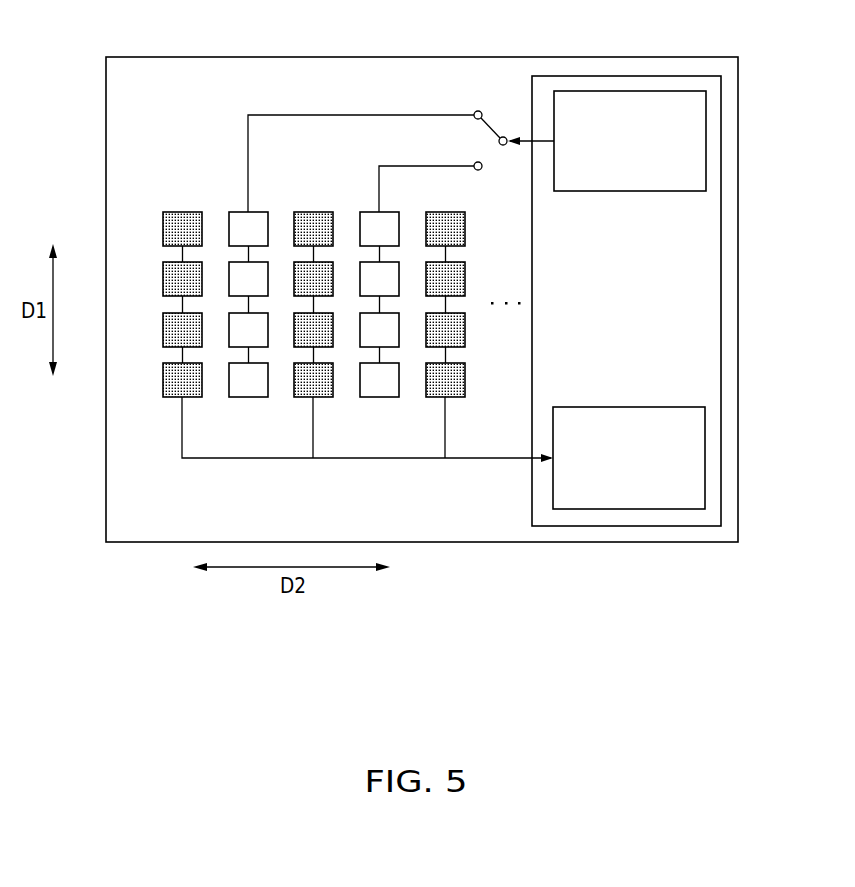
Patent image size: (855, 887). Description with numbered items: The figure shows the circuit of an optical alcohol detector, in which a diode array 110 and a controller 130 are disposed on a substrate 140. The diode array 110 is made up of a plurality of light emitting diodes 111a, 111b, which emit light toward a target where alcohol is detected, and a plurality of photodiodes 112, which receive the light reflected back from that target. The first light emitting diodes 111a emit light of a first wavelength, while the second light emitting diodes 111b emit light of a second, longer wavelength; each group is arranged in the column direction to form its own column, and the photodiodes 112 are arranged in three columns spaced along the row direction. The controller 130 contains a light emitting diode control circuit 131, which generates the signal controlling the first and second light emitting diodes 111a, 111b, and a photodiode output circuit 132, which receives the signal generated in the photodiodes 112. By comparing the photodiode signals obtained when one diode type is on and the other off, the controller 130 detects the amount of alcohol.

The substrate 140 is at (510, 57).
The controller 130 is at (721, 301).
The light emitting diode control circuit 131 is at (611, 153).
The photodiode output circuit 132 is at (610, 471).
The diode array 110 is at (248, 420).
The first light emitting diode 111a is at (237, 212).
The second light emitting diode 111b is at (368, 212).
The photodiode 112 is at (175, 398).